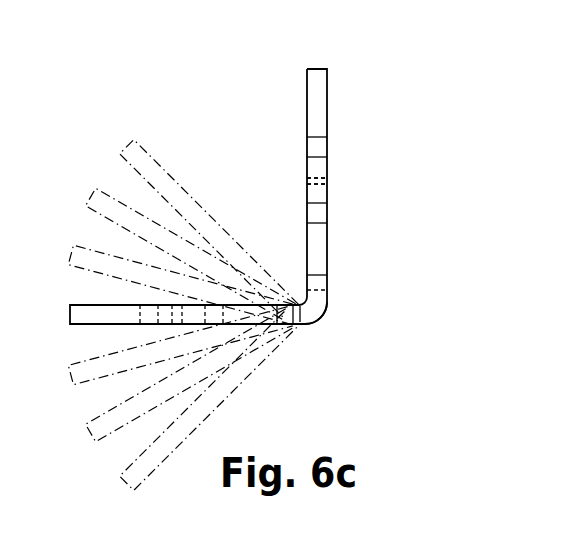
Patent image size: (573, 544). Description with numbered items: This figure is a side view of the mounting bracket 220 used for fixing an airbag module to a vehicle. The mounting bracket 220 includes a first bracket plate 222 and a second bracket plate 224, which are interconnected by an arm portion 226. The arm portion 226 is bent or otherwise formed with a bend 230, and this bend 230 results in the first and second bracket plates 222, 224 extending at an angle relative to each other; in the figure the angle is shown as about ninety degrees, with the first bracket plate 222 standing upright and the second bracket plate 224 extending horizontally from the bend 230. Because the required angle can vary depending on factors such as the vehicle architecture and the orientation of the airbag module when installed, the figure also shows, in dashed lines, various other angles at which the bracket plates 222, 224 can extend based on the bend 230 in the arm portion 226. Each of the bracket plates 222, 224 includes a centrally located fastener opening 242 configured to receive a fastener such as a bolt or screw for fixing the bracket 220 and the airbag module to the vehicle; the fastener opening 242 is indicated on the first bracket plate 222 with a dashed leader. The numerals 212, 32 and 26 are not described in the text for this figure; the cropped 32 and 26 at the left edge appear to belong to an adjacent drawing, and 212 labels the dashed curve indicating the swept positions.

The mounting bracket 220 is at (230, 143).
The first bracket plate 222 is at (315, 115).
The second bracket plate 224 is at (111, 312).
The arm portion 226 is at (300, 313).
The bend 230 is at (312, 318).
The fastener opening 242 is at (315, 192).
The swept arm positions 212 is at (178, 309).
The partial numeral (adjacent figure) 32 is at (13, 104).
The partial numeral (adjacent figure) 26 is at (11, 262).